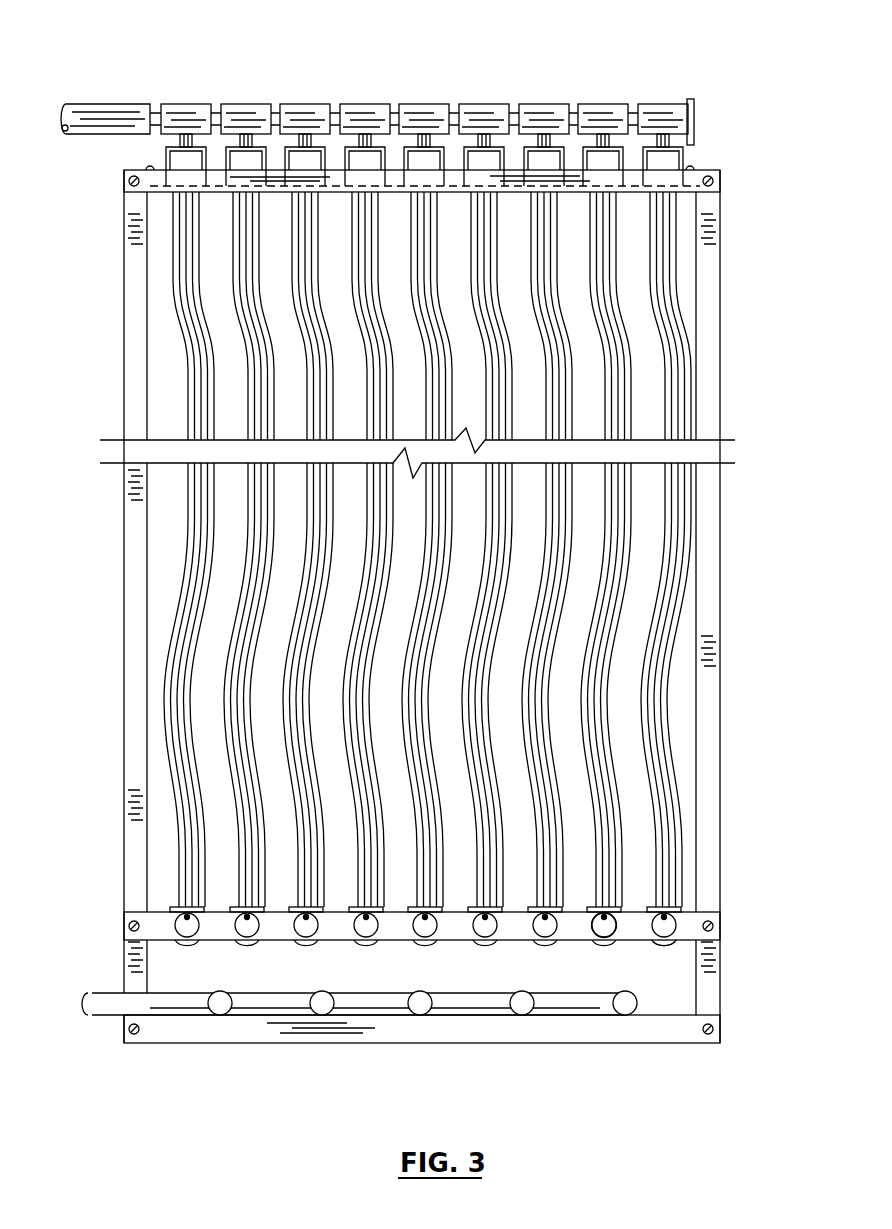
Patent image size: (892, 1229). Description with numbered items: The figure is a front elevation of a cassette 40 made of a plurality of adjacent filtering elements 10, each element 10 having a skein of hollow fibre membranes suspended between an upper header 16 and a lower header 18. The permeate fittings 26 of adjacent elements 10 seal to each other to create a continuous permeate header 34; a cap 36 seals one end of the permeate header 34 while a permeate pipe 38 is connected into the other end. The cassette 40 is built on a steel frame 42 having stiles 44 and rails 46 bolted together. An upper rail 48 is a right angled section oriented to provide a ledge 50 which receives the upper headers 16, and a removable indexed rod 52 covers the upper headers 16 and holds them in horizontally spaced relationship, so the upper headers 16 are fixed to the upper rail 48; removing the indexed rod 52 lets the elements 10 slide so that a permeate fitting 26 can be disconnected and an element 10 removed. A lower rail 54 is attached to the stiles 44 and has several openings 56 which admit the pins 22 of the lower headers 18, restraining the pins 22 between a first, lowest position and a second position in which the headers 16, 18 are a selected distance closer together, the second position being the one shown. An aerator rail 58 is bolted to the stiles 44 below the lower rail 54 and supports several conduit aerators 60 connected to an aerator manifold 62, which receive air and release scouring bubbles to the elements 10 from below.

The filtering element 10 is at (178, 312).
The upper header 16 is at (665, 160).
The lower header 18 is at (662, 948).
The pin 22 is at (655, 922).
The permeate fitting 26 is at (360, 104).
The permeate header 34 is at (460, 118).
The cap 36 is at (697, 106).
The permeate pipe 38 is at (87, 104).
The cassette 40 is at (451, 616).
The steel frame 42 is at (455, 924).
The stile 44 is at (713, 766).
The rail 46 is at (451, 616).
The upper rail 48 is at (473, 156).
The ledge 50 is at (140, 168).
The indexed rod 52 is at (688, 170).
The lower rail 54 is at (477, 924).
The opening 56 is at (675, 930).
The aerator rail 58 is at (667, 1037).
The conduit aerator 60 is at (220, 1007).
The aerator manifold 62 is at (470, 1014).